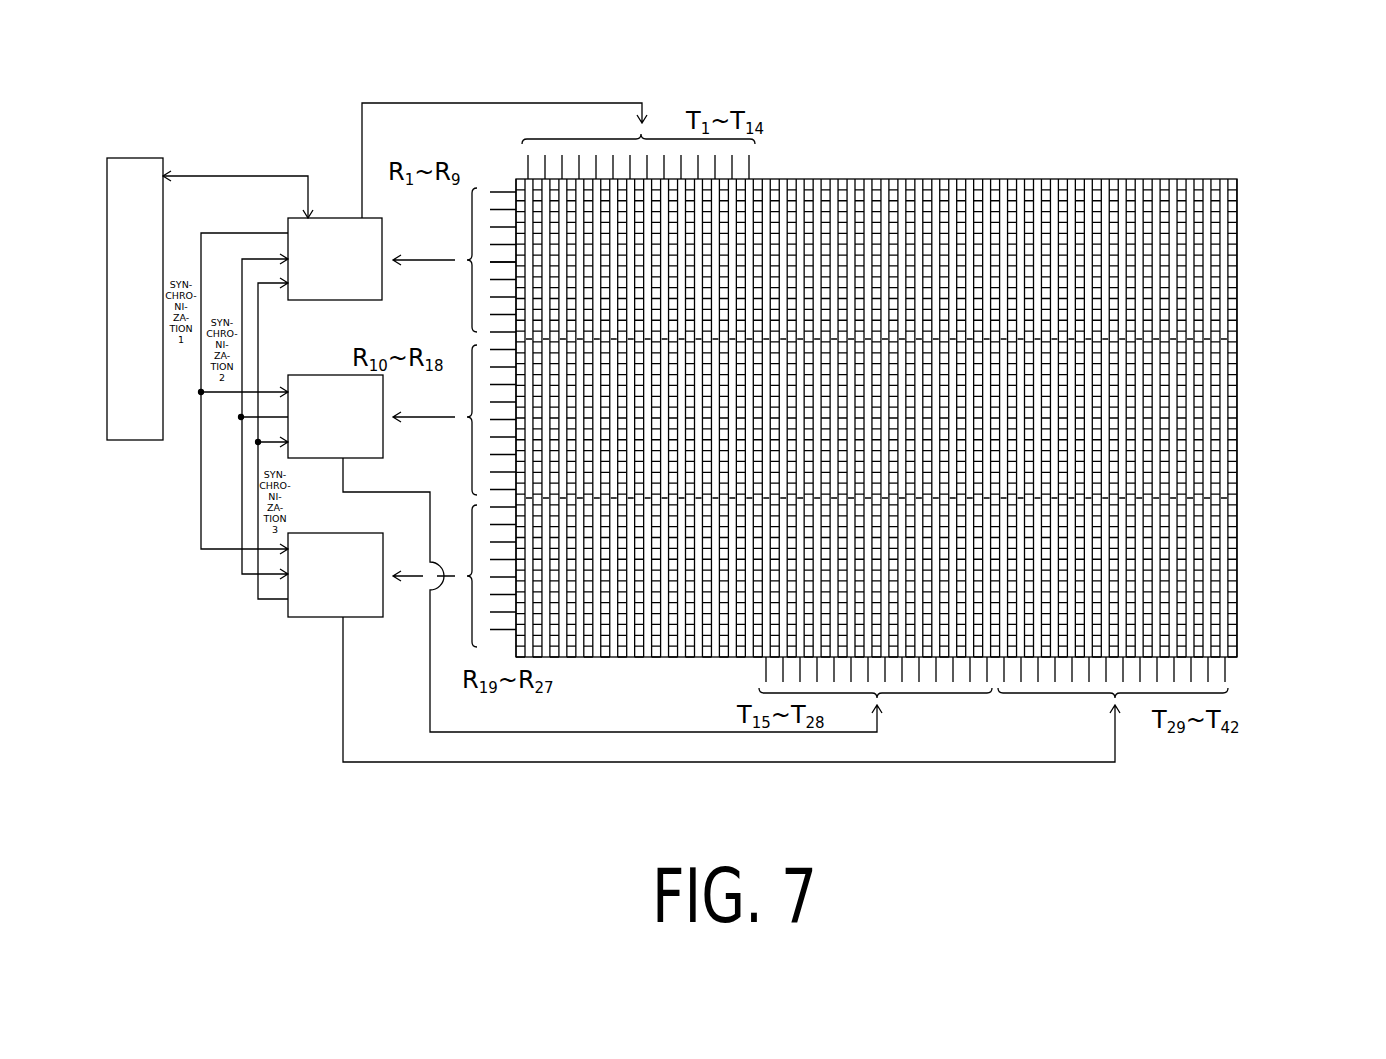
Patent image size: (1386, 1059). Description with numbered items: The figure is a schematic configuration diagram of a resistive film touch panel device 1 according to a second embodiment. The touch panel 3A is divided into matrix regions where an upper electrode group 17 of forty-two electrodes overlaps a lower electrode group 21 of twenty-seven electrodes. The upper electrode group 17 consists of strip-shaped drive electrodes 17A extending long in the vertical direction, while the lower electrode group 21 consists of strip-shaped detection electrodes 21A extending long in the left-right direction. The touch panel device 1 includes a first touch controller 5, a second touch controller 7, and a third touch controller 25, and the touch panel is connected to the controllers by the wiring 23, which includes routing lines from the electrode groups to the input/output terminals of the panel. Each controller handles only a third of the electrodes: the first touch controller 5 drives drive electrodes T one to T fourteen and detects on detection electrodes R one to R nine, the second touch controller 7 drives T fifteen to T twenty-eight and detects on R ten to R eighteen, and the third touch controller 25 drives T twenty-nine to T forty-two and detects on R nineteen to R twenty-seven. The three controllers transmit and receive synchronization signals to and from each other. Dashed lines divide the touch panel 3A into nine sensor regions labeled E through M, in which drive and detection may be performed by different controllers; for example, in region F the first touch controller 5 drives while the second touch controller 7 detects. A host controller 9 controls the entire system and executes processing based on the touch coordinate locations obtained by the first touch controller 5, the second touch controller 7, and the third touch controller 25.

The touch panel device 1 is at (929, 341).
The touch panel 3A is at (929, 360).
The first touch controller 5 is at (332, 217).
The second touch controller 7 is at (312, 375).
The host controller 9 is at (143, 157).
The upper electrode group 17 is at (876, 360).
The drive electrodes 17A is at (905, 86).
The lower electrode group 21 is at (929, 403).
The detection electrodes 21A is at (900, 228).
The wiring 23 is at (511, 91).
The third touch controller 25 is at (312, 533).